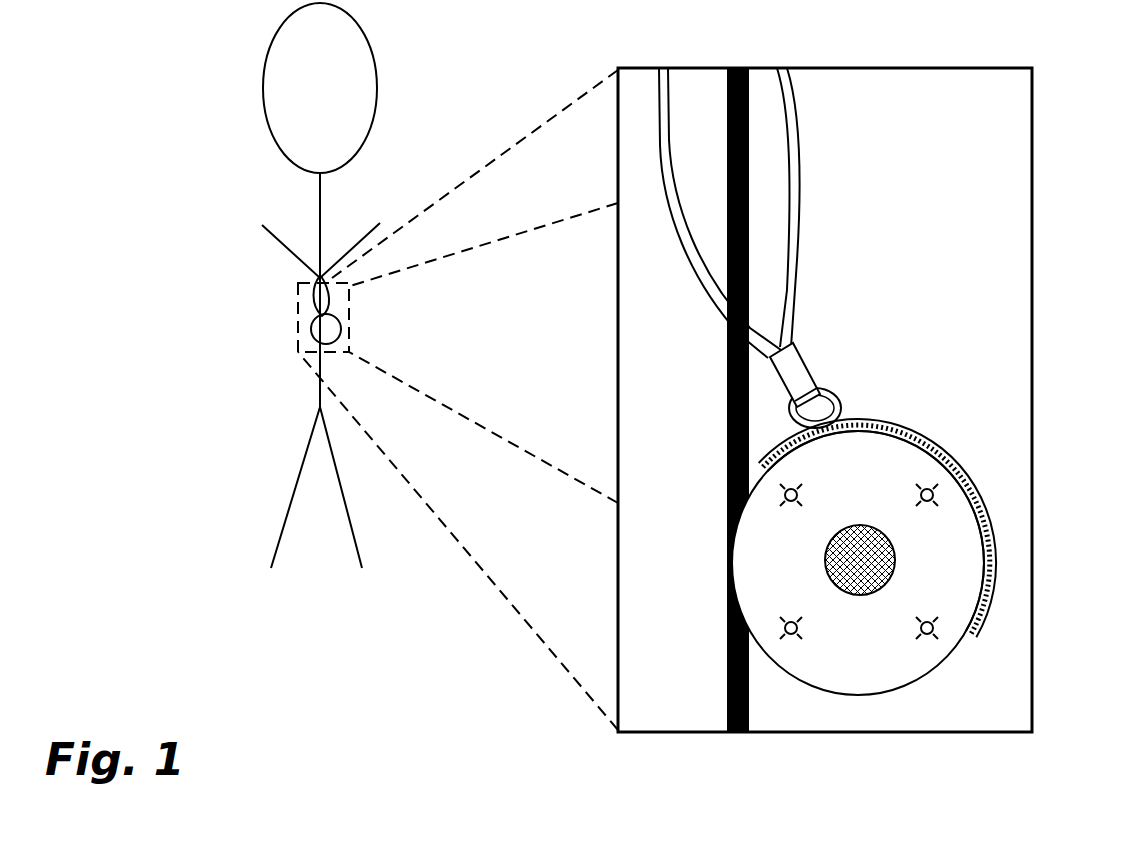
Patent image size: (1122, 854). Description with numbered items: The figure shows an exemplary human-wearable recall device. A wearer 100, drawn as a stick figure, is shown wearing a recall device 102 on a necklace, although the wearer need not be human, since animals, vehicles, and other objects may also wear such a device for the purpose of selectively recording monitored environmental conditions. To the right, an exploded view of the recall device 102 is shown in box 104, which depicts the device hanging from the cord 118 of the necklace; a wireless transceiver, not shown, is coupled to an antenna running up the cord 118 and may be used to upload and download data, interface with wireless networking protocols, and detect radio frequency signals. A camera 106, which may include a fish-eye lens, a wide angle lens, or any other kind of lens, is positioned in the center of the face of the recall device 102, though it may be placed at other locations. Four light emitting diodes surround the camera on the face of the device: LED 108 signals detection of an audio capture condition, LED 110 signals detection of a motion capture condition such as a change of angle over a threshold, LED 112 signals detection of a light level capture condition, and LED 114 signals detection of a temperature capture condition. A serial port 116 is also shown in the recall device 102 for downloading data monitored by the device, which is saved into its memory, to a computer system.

The wearer 100 is at (268, 45).
The recall device 102 is at (312, 328).
The box 104 is at (643, 68).
The camera 106 is at (896, 542).
The LED 108 is at (937, 490).
The LED 110 is at (930, 638).
The LED 112 is at (792, 638).
The LED 114 is at (789, 505).
The serial port 116 is at (925, 432).
The cord 118 is at (793, 100).